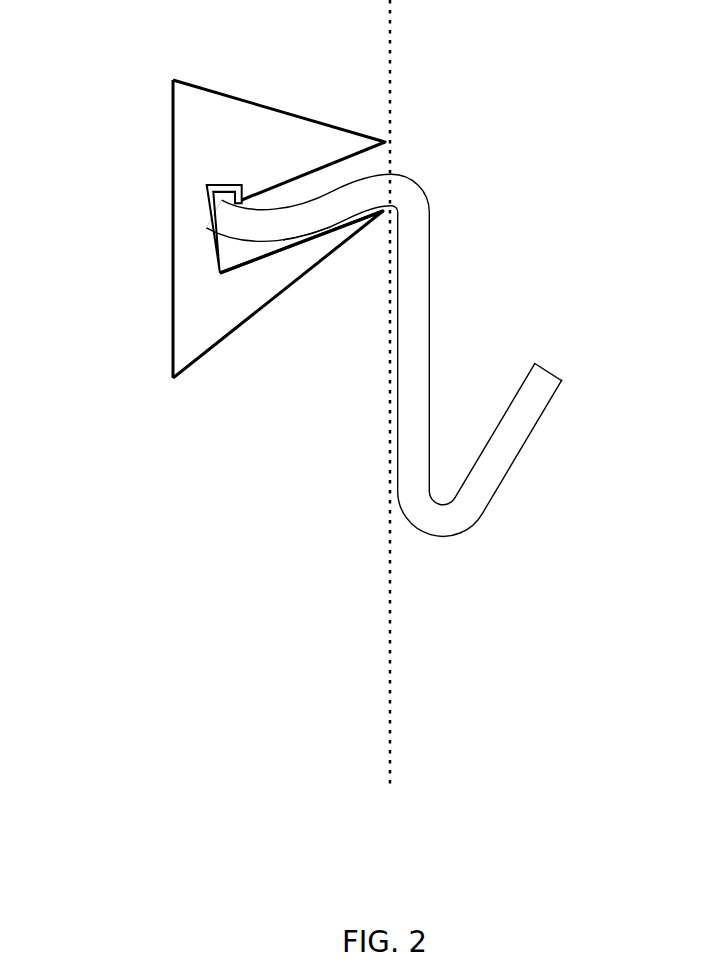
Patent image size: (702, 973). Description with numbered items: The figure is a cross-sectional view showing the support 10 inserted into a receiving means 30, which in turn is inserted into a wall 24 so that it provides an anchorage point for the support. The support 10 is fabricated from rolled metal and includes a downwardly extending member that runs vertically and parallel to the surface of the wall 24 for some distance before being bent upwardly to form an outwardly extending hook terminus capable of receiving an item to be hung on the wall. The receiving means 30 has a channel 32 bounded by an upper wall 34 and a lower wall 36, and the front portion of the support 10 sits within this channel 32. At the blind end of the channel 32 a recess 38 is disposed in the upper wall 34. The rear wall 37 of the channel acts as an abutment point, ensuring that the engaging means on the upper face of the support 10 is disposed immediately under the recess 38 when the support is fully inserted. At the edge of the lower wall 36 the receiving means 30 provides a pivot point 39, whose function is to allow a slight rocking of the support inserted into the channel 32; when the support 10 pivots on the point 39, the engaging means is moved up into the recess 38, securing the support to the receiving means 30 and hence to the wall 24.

The support 10 is at (432, 179).
The wall 24 is at (389, 606).
The receiving means 30 is at (219, 206).
The channel 32 is at (204, 264).
The upper wall 34 is at (310, 171).
The lower wall 36 is at (232, 272).
The rear wall 37 is at (213, 204).
The recess 38 is at (217, 185).
The pivot point 39 is at (310, 238).